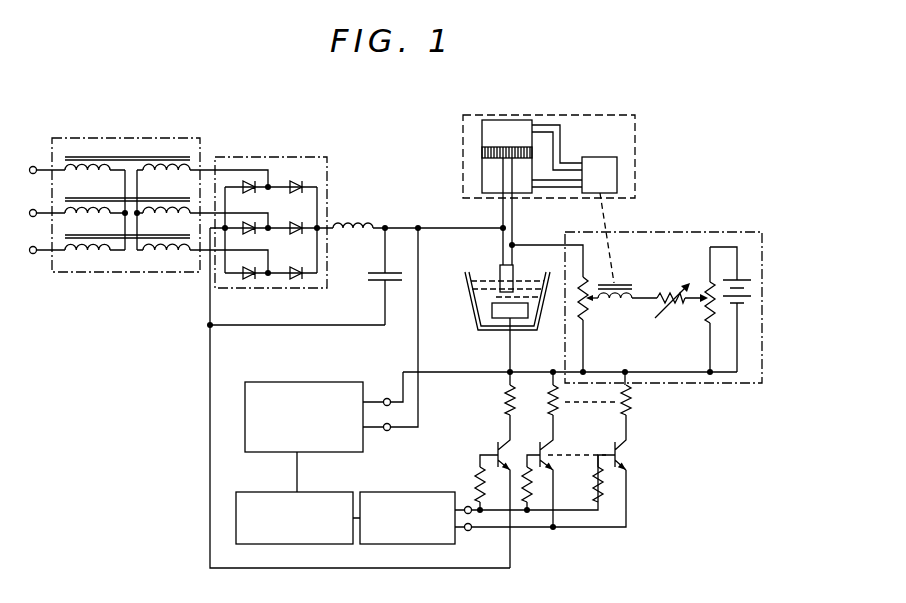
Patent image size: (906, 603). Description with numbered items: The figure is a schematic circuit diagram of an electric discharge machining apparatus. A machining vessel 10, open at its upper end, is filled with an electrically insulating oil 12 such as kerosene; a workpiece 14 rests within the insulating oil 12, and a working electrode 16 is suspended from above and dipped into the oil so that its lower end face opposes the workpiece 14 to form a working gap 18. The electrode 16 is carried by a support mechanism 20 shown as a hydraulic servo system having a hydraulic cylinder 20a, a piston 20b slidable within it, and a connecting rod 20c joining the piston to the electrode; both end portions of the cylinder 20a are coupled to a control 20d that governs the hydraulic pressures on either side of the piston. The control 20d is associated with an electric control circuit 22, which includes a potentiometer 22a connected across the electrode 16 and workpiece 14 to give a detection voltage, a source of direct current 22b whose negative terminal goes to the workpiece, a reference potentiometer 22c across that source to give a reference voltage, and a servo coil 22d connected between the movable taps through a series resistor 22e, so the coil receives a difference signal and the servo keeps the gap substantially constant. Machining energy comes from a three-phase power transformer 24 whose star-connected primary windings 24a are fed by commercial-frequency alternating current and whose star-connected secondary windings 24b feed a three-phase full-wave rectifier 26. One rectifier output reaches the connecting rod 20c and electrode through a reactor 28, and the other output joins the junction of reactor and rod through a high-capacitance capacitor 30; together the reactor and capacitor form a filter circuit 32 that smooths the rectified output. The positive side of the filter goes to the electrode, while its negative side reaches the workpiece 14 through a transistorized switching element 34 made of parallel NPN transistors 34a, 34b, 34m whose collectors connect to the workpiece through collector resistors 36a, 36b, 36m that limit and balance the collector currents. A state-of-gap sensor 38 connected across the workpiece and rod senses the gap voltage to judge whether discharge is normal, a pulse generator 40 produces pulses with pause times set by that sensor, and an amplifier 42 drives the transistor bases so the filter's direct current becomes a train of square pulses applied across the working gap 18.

The machining vessel 10 is at (538, 333).
The insulating oil 12 is at (490, 275).
The workpiece 14 is at (492, 310).
The working electrode 16 is at (514, 276).
The working gap 18 is at (505, 300).
The support mechanism 20 is at (546, 180).
The hydraulic cylinder 20a is at (482, 131).
The piston 20b is at (482, 155).
The connecting rod 20c is at (513, 205).
The control 20d is at (617, 170).
The electric control circuit 22 is at (690, 290).
The potentiometer 22a is at (587, 306).
The source of direct current 22b is at (752, 291).
The reference potentiometer 22c is at (710, 322).
The servo coil 22d is at (625, 301).
The variable resistor 22e is at (672, 298).
The three-phase power transformer 24 is at (149, 206).
The primary windings 24a is at (88, 252).
The secondary windings 24b is at (158, 252).
The three-phase full-wave rectifier 26 is at (290, 158).
The reactor 28 is at (374, 201).
The capacitor 30 is at (368, 277).
The filter circuit 32 is at (367, 255).
The transistorized switching element 34 is at (575, 491).
The NPN-type transistor 34a is at (497, 449).
The NPN-type transistor 34b is at (546, 452).
The NPN-type transistor 34m is at (622, 452).
The collector resistor 36a is at (506, 401).
The collector resistor 36b is at (557, 415).
The collector resistor 36m is at (630, 402).
The state-of-gap sensor 38 is at (325, 382).
The pulse generator 40 is at (255, 492).
The amplifier 42 is at (420, 492).